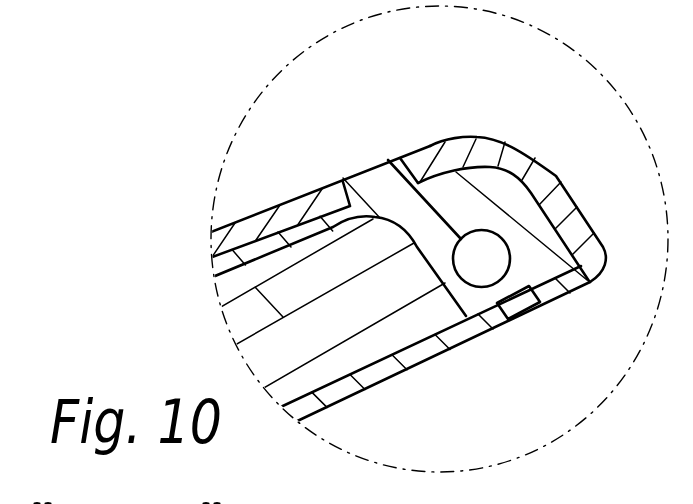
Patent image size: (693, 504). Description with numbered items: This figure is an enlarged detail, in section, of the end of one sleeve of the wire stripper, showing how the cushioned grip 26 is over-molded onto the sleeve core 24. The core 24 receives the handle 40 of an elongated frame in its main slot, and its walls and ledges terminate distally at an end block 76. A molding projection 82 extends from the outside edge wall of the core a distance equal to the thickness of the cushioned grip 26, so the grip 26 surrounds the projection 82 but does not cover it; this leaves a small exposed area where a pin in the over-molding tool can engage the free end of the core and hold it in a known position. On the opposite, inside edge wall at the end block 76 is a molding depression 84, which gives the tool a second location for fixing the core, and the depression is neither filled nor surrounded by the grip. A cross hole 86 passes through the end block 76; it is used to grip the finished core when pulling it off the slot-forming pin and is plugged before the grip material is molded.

The cushioned grip 26 is at (297, 210).
The handle portion 40 is at (330, 365).
The end block 76 is at (522, 228).
The molding projection 82 is at (406, 168).
The sleeve core 24 is at (422, 358).
The cross hole 86 is at (474, 267).
The molding depression 84 is at (507, 307).